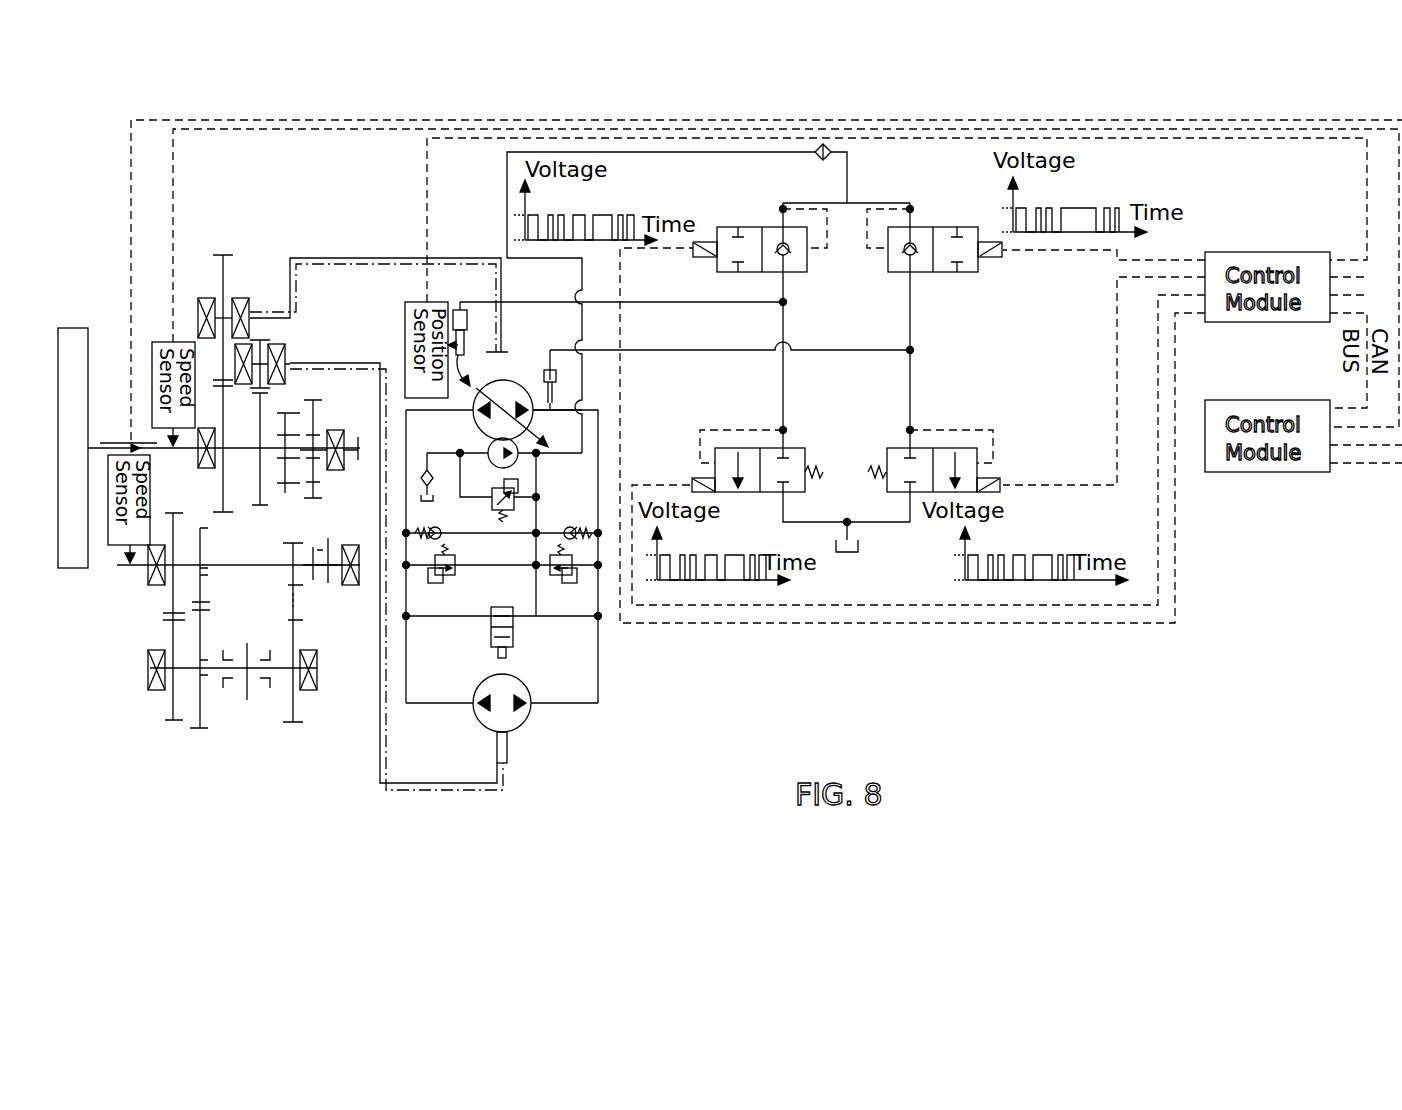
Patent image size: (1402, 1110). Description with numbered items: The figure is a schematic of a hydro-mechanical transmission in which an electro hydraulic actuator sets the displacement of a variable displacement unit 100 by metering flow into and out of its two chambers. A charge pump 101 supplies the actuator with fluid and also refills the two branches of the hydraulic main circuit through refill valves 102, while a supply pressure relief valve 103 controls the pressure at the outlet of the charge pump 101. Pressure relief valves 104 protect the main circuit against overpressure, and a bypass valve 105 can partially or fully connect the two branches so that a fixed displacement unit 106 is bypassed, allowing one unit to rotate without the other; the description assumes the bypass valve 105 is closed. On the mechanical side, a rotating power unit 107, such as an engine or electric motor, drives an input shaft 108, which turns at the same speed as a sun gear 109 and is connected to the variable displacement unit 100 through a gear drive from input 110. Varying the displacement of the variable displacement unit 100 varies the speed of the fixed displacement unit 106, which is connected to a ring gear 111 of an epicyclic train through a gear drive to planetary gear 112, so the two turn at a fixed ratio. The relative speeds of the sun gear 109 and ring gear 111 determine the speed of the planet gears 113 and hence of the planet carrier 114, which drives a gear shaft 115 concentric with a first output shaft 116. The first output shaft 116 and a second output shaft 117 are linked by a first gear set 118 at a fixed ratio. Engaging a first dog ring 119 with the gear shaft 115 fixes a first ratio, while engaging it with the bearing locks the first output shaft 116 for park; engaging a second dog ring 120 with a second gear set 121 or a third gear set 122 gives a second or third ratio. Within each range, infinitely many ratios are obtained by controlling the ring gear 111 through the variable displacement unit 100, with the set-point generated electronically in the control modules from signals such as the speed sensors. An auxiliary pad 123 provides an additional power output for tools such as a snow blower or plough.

The variable displacement unit 100 is at (532, 402).
The charge pump 101 is at (515, 447).
The refill valves 102 is at (564, 537).
The supply pressure relief valve 103 is at (518, 486).
The pressure relief valves 104 is at (548, 572).
The bypass valve 105 is at (513, 633).
The fixed displacement unit 106 is at (522, 725).
The rotating power unit 107 is at (73, 328).
The input shaft 108 is at (115, 443).
The sun gear 109 is at (280, 452).
The gear drive from input 110 is at (320, 258).
The ring gear 111 is at (258, 480).
The gear drive to planetary gear 112 is at (462, 785).
The planet gears 113 is at (285, 410).
The planet carrier 114 is at (293, 480).
The gear shaft 115 is at (242, 560).
The first output shaft 116 is at (130, 565).
The second output shaft 117 is at (148, 673).
The first gear set 118 is at (173, 636).
The first dog ring 119 is at (336, 587).
The second dog ring 120 is at (250, 695).
The second gear set 121 is at (200, 640).
The third gear set 122 is at (290, 620).
The auxiliary pad 123 is at (358, 460).